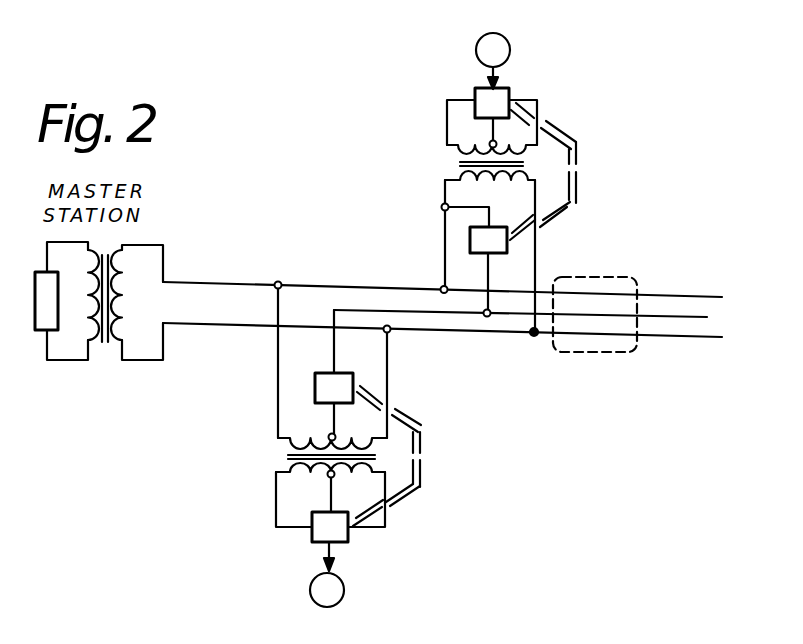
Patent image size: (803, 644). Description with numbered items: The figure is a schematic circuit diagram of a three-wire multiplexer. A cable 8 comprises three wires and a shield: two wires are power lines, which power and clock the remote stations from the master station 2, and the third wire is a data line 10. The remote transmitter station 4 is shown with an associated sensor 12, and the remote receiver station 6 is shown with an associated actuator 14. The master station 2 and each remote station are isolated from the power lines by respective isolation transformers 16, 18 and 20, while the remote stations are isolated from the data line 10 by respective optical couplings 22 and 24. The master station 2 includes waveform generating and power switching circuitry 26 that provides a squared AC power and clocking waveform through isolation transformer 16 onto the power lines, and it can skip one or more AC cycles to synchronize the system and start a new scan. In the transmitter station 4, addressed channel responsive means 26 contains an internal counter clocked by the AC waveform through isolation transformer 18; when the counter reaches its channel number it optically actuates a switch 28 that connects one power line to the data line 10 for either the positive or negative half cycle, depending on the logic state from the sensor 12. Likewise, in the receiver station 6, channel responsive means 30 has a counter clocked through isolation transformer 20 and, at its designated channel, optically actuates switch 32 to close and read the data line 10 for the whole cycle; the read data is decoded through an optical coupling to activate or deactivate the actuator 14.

The master station 2 is at (125, 300).
The remote transmitter station 4 is at (425, 167).
The remote receiver station 6 is at (273, 487).
The cable 8 is at (623, 277).
The data line 10 is at (662, 316).
The sensor 12 is at (477, 48).
The actuator 14 is at (308, 590).
The isolation transformer 16 is at (106, 355).
The isolation transformer 18 is at (448, 164).
The isolation transformer 20 is at (272, 447).
The optical coupling 22 is at (578, 130).
The optical coupling 24 is at (426, 421).
The waveform generating and power switching circuitry 26 is at (38, 329).
The switch 28 is at (496, 256).
The channel responsive means 30 is at (350, 541).
The switch 32 is at (345, 372).